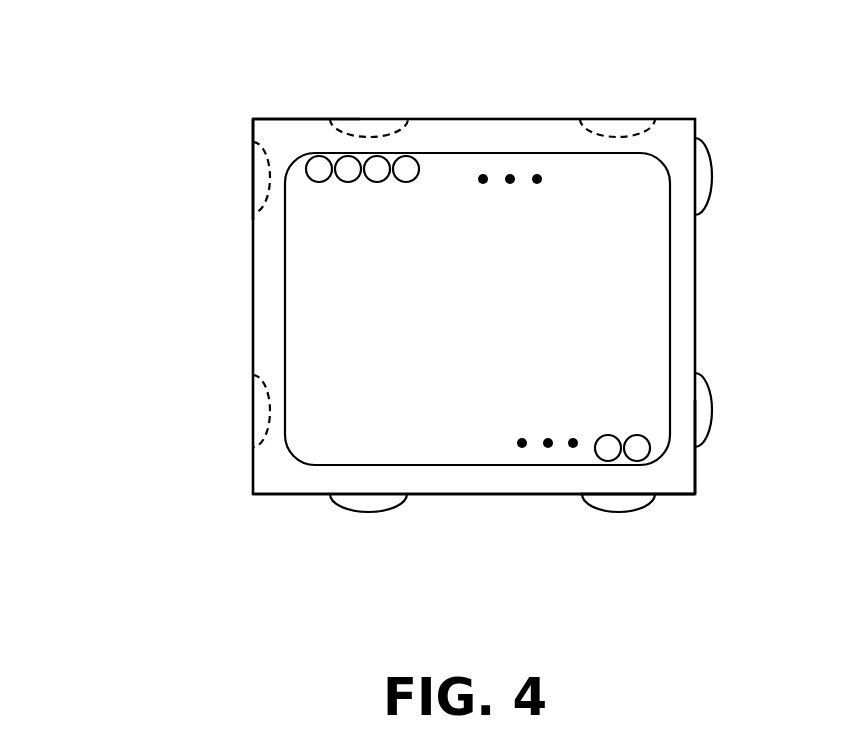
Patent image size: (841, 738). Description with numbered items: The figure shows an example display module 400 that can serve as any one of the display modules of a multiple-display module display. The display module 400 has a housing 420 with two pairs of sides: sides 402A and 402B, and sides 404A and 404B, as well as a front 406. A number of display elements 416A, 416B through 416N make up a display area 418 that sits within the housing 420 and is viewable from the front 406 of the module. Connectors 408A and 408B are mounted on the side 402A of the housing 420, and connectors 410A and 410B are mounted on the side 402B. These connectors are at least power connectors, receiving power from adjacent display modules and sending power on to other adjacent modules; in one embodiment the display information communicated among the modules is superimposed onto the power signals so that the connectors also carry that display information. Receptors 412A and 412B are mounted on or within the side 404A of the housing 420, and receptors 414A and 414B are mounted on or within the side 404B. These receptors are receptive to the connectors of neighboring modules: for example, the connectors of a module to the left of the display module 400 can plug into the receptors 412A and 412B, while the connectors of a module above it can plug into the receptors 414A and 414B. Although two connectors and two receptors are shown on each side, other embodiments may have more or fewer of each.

The display module 400 is at (148, 491).
The side 402A is at (688, 497).
The side 402B is at (697, 475).
The side 404A is at (252, 132).
The side 404B is at (280, 118).
The front 406 is at (492, 475).
The connector 408A is at (368, 512).
The connector 408B is at (613, 512).
The connector 410A is at (712, 172).
The connector 410B is at (712, 420).
The receptor 412A is at (258, 170).
The receptor 412B is at (253, 410).
The receptor 414A is at (372, 128).
The receptor 414B is at (628, 128).
The display element 416A is at (318, 182).
The display element 416B is at (355, 182).
The display element 416N is at (636, 435).
The display area 418 is at (645, 293).
The housing 420 is at (522, 130).